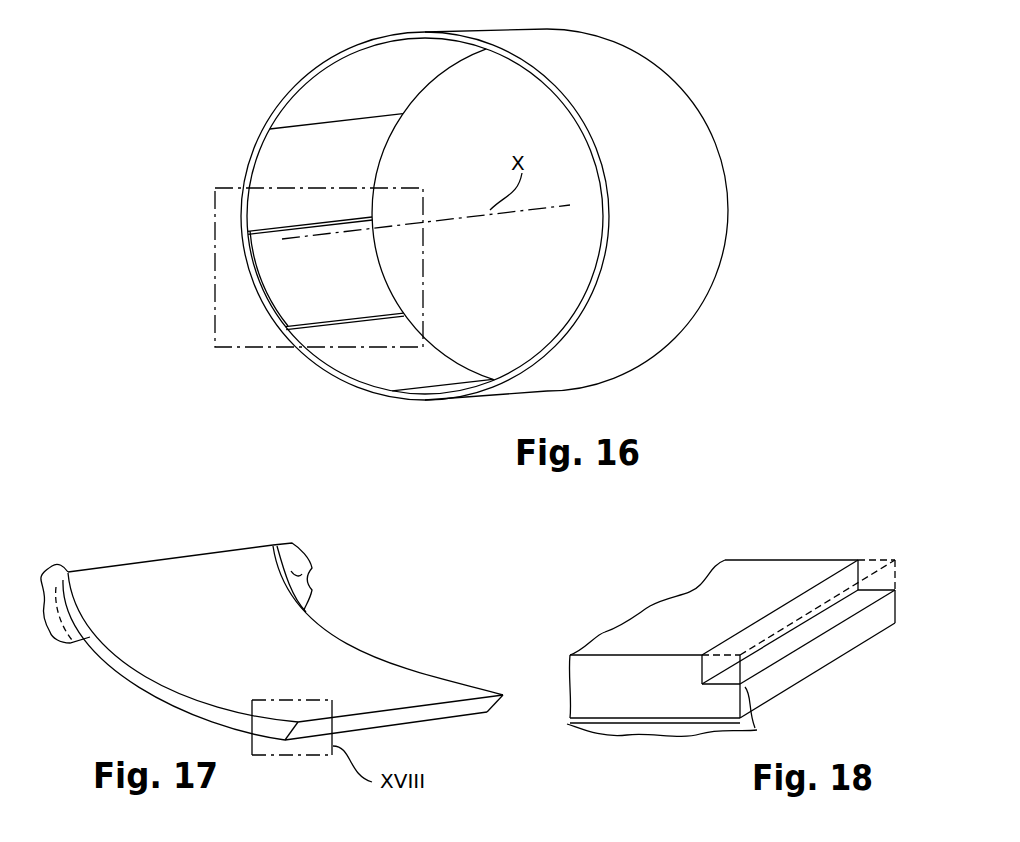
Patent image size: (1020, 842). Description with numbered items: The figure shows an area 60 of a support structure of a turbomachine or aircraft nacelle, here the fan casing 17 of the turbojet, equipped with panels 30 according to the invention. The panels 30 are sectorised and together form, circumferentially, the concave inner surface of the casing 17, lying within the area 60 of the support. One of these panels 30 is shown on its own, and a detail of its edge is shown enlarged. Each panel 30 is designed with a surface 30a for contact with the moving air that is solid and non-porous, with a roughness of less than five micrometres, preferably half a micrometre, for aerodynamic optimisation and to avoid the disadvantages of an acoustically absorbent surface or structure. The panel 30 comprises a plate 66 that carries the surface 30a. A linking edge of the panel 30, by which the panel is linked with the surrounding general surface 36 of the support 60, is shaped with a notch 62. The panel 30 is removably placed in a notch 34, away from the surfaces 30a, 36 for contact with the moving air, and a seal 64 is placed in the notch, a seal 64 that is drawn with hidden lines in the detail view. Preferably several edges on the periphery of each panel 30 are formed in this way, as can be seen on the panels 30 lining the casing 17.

In FIG. 16, the fan casing 17 is at (672, 66).
In FIG. 16, the panel 30 is at (358, 85).
In FIG. 17, the panel 30 is at (309, 650).
In FIG. 16, the surface for contact with moving air 30a is at (357, 363).
In FIG. 17, the surface for contact with moving air 30a is at (198, 580).
In FIG. 18, the surface for contact with moving air 30a is at (702, 608).
In FIG. 18, the notch 34 is at (628, 723).
In FIG. 16, the surrounding general surface 36 is at (245, 250).
In FIG. 17, the surrounding general surface 36 is at (295, 575).
In FIG. 16, the area of a support 60 is at (248, 348).
In FIG. 17, the area of a support 60 is at (50, 553).
In FIG. 18, the area of a support 60 is at (774, 727).
In FIG. 18, the notch 62 is at (720, 690).
In FIG. 16, the seal 64 is at (380, 236).
In FIG. 18, the seal 64 is at (897, 575).
In FIG. 16, the plate 66 is at (322, 297).